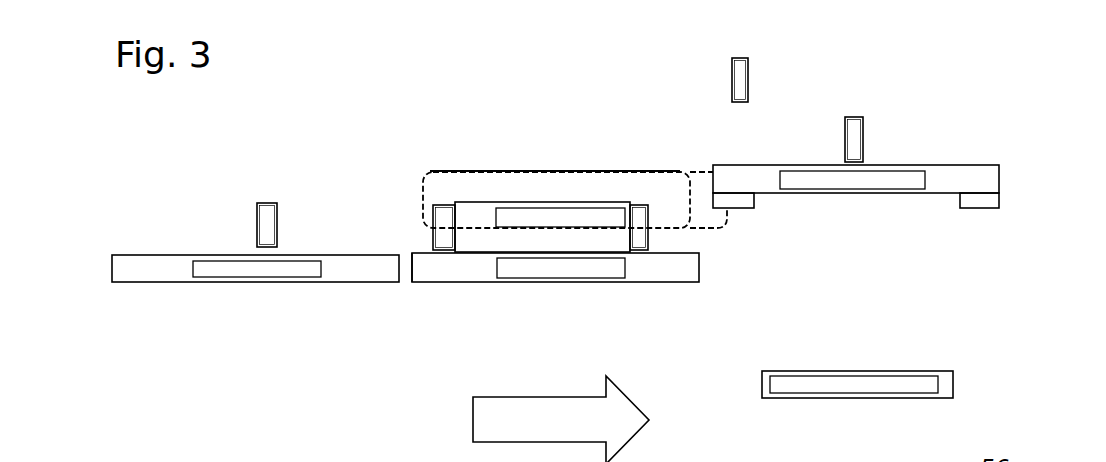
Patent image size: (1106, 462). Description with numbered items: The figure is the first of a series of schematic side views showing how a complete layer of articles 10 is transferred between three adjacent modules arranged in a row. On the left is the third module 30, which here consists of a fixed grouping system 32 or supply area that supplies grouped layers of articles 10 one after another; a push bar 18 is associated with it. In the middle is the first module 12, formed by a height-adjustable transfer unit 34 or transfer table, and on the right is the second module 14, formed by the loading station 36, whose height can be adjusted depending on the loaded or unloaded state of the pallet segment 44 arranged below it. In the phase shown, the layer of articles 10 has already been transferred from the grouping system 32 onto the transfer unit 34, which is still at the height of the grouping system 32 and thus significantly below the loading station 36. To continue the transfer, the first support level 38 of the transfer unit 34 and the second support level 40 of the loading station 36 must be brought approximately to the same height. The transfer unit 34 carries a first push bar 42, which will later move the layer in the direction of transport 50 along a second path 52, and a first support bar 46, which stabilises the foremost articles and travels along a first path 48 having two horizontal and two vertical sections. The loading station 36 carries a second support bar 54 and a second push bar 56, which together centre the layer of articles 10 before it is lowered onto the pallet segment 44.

The layer of articles 10 is at (545, 188).
The first module 12 is at (539, 310).
The transfer unit 34 is at (451, 268).
The second module 14 is at (875, 142).
The loading station 36 is at (965, 165).
The push bar 18 is at (265, 203).
The third module 30 is at (241, 312).
The grouping system 32 is at (154, 268).
The first support level 38 is at (418, 242).
The second support level 40 is at (875, 129).
The first push bar 42 is at (440, 204).
The pallet segment 44 is at (938, 371).
The first support bar 46 is at (637, 205).
The first path 48 is at (698, 224).
The direction of transport 50 is at (568, 431).
The second path 52 is at (740, 225).
The second support bar 54 is at (852, 117).
The second push bar 56 is at (740, 58).